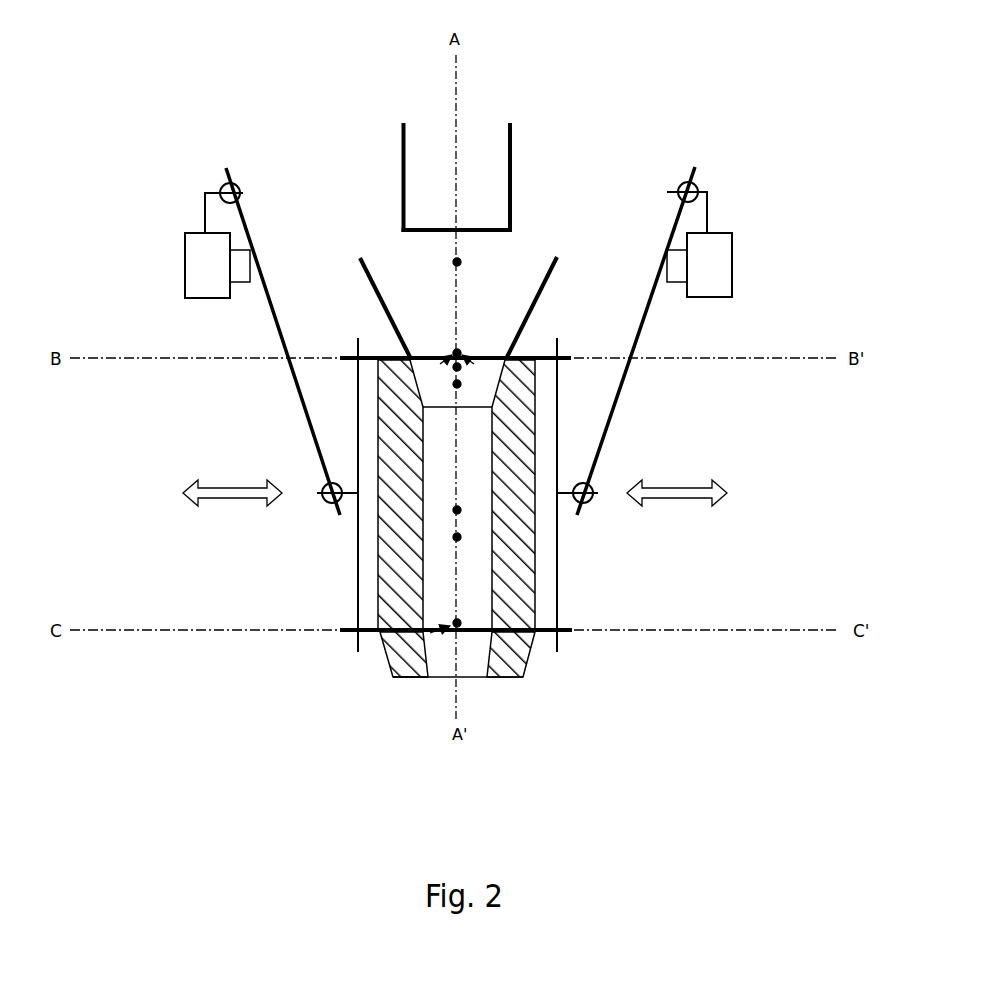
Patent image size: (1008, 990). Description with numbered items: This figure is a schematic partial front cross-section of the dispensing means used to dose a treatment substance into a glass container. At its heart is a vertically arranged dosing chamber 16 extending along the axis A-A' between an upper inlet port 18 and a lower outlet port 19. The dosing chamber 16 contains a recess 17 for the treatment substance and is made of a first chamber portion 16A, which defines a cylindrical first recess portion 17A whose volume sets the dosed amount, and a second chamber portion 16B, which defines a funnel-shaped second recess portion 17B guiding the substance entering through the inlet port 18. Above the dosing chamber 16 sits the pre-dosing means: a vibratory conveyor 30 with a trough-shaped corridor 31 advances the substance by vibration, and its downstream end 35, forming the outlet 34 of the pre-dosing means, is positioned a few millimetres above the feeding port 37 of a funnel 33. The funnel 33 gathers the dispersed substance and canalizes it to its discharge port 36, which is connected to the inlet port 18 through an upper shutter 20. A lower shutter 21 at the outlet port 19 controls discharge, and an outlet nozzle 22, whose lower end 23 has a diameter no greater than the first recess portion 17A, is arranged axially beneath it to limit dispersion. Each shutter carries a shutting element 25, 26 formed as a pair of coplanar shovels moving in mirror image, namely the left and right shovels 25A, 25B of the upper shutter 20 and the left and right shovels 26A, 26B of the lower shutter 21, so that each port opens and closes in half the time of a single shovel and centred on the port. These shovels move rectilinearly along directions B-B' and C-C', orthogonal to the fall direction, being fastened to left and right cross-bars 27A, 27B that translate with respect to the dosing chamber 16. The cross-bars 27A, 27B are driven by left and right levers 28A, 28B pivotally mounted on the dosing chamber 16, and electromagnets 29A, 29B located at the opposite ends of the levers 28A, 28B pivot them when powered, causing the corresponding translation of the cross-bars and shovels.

The dosing chamber 16 is at (394, 555).
The first chamber portion 16A is at (372, 568).
The second chamber portion 16B is at (372, 385).
The recess 17 is at (610, 498).
The first recess portion 17A is at (457, 537).
The second recess portion 17B is at (457, 384).
The inlet port 18 is at (457, 367).
The outlet port 19 is at (466, 625).
The upper shutter 20 is at (500, 350).
The lower shutter 21 is at (440, 640).
The outlet nozzle 22 is at (517, 672).
The lower end 23 is at (398, 677).
The shutting element 25 is at (442, 219).
The left shovel 25A is at (433, 350).
The right shovel 25B is at (504, 345).
The shutting element 26 is at (459, 724).
The left shovel 26A is at (418, 677).
The right shovel 26B is at (497, 677).
The left cross-bar 27A is at (357, 465).
The right cross-bar 27B is at (560, 463).
The left lever 28A is at (278, 332).
The right lever 28B is at (638, 335).
The electromagnet 29A is at (193, 257).
The electromagnet 29B is at (717, 252).
The vibratory conveyor 30 is at (419, 132).
The corridor 31 is at (403, 185).
The funnel 33 is at (547, 277).
The outlet 34 is at (403, 228).
The downstream end 35 is at (478, 227).
The discharge port 36 is at (484, 344).
The feeding port 37 is at (456, 262).